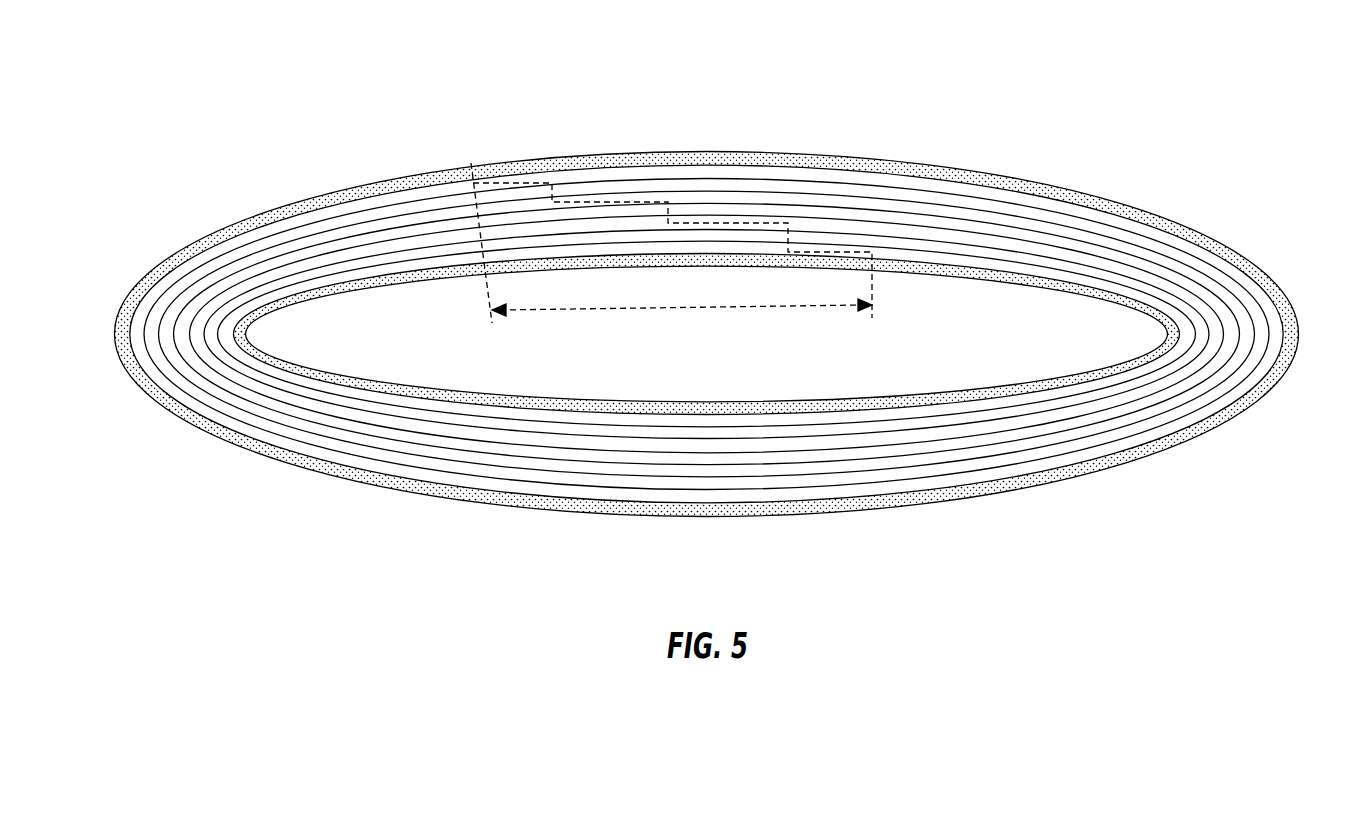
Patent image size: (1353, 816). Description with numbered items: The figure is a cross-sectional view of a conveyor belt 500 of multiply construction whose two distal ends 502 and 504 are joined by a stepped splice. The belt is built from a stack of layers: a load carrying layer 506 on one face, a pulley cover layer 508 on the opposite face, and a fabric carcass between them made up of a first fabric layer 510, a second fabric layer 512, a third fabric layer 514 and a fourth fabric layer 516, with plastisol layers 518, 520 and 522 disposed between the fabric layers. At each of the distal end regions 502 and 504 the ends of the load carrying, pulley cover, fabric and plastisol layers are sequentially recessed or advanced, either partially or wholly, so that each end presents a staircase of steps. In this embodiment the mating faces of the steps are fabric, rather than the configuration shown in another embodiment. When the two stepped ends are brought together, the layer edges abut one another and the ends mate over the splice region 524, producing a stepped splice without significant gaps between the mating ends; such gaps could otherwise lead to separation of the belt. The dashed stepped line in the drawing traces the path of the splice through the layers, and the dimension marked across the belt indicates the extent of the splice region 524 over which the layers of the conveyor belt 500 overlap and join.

The conveyor belt 500 is at (298, 84).
The distal end 502 is at (420, 163).
The distal end 504 is at (790, 149).
The load carrying layer 506 is at (930, 497).
The pulley cover layer 508 is at (597, 410).
The first fabric layer 510 is at (1060, 463).
The second fabric layer 512 is at (1193, 393).
The third fabric layer 514 is at (357, 418).
The fourth fabric layer 516 is at (515, 415).
The plastisol layer 518 is at (1138, 428).
The plastisol layer 520 is at (300, 413).
The plastisol layer 522 is at (448, 418).
The splice region 524 is at (693, 301).